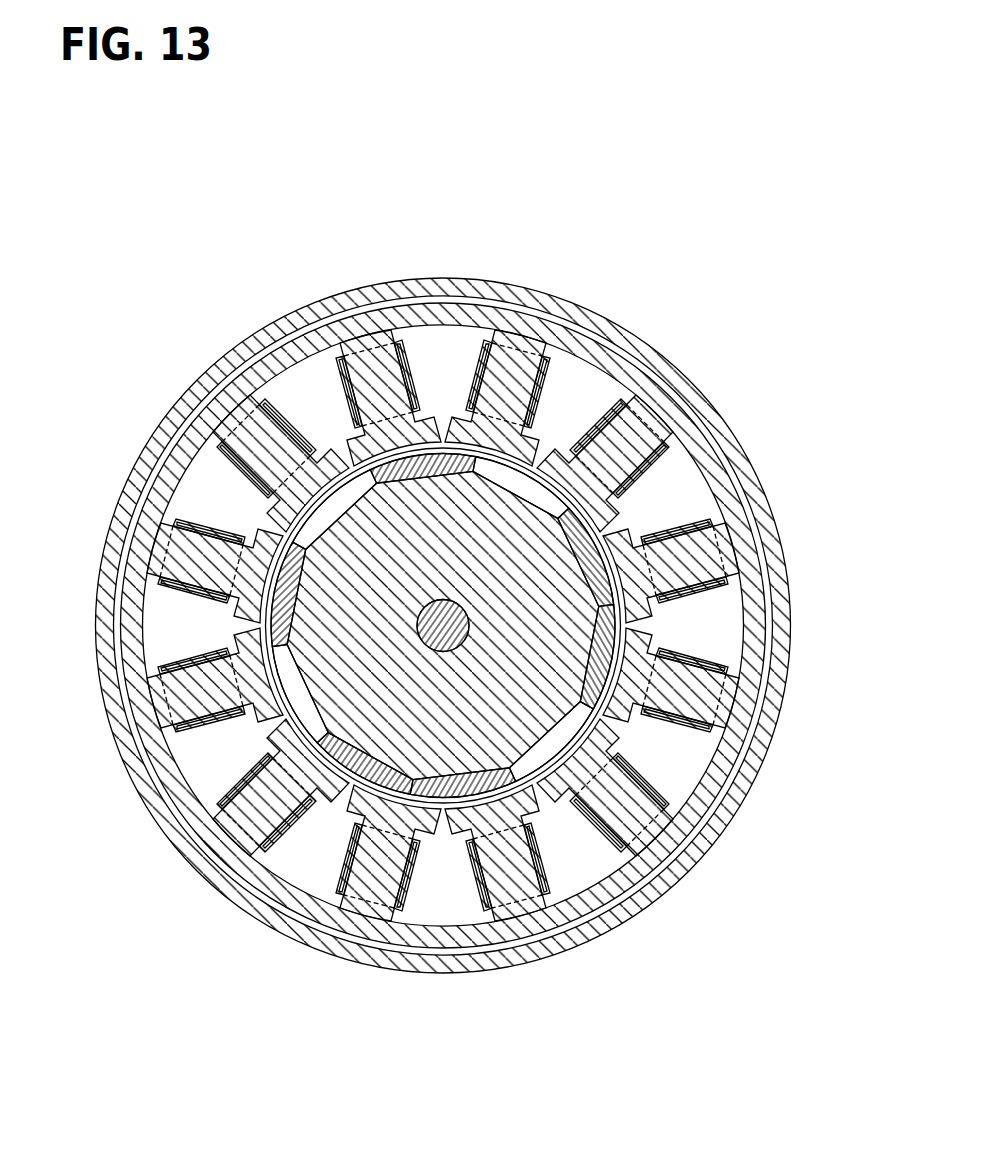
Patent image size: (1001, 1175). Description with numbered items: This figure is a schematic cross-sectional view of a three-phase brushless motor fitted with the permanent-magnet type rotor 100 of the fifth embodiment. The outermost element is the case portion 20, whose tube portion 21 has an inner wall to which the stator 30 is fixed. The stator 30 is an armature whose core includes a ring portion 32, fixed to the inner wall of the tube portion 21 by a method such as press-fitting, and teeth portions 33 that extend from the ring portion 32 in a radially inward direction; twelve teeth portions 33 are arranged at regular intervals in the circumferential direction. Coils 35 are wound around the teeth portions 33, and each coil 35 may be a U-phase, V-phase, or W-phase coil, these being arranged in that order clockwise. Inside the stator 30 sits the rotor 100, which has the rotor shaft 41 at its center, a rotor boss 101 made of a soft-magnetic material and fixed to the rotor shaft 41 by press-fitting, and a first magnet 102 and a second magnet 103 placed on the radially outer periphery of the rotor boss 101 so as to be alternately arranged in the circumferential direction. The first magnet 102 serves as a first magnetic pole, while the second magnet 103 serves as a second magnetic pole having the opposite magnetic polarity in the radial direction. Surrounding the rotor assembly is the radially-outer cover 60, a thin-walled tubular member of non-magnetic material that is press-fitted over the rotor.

The case portion 20 is at (563, 299).
The tube portion 21 is at (450, 600).
The stator 30 is at (443, 567).
The ring portion 32 is at (378, 385).
The teeth portions 33 is at (355, 360).
The coils 35 is at (318, 380).
The rotor shaft 41 is at (535, 782).
The radially-outer cover 60 is at (268, 594).
The rotor 100 is at (437, 607).
The rotor boss 101 is at (383, 675).
The first magnet 102 is at (545, 760).
The second magnet 103 is at (288, 598).